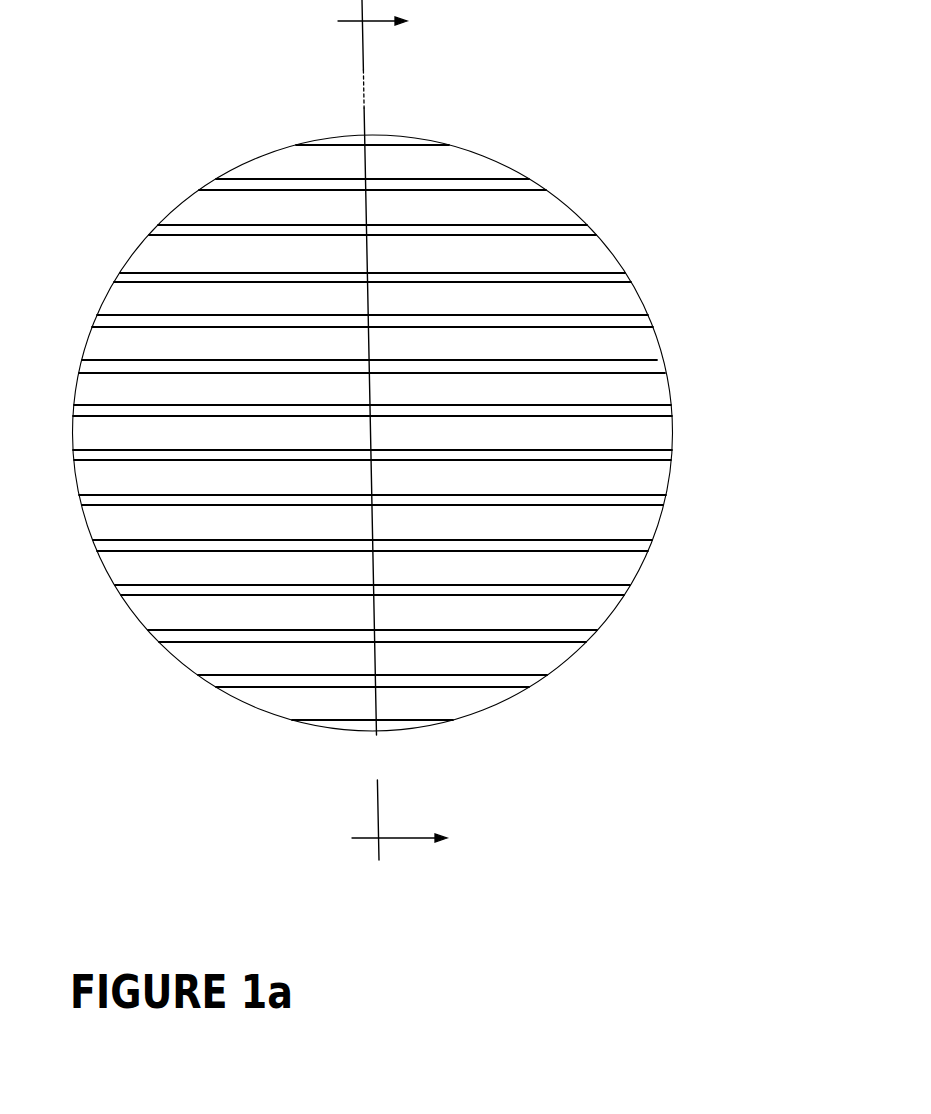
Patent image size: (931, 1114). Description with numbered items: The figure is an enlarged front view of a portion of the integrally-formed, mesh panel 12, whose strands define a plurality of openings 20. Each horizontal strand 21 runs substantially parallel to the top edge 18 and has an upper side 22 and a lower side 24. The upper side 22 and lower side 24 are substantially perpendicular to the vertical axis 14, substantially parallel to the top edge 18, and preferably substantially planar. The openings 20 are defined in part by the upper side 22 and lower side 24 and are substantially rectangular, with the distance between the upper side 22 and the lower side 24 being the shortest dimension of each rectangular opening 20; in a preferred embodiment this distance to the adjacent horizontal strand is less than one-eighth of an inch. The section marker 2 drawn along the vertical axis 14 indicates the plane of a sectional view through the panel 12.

The section line 2- 2 is at (404, 430).
The integrally-formed, mesh panel 12 is at (128, 690).
The vertical axis 14 is at (352, 104).
The top edge 18 is at (407, 138).
The openings 20 is at (540, 208).
The horizontal strand 21 is at (607, 277).
The upper side 22 is at (637, 358).
The lower side 24 is at (632, 382).